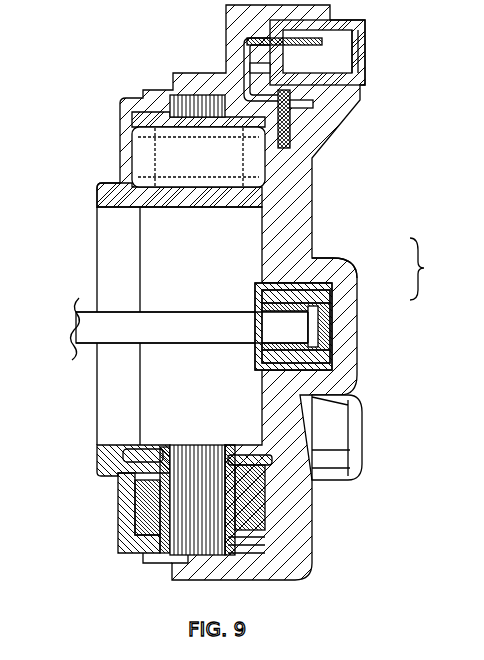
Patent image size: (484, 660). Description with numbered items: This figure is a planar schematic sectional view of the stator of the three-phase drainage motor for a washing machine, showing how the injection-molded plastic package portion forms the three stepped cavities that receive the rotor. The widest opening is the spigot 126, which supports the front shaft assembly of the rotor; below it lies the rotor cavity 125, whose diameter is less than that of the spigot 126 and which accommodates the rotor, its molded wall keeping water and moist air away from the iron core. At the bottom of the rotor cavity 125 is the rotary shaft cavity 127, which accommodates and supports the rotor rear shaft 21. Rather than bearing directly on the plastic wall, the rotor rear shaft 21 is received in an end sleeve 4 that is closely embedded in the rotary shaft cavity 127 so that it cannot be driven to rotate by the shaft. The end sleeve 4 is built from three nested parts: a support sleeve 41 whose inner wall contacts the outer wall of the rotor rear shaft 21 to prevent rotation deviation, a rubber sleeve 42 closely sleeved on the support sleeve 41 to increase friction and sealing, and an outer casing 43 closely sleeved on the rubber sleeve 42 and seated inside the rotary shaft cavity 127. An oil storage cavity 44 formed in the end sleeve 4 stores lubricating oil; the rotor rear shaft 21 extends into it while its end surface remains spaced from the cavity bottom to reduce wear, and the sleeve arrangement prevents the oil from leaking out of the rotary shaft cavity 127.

The end sleeve 4 is at (424, 269).
The rotor rear shaft 21 is at (285, 330).
The support sleeve 41 is at (333, 300).
The rubber sleeve 42 is at (333, 290).
The casing 43 is at (340, 270).
The oil storage cavity 44 is at (333, 326).
The rotor cavity 125 is at (213, 292).
The spigot 126 is at (125, 295).
The rotary shaft cavity 127 is at (346, 397).